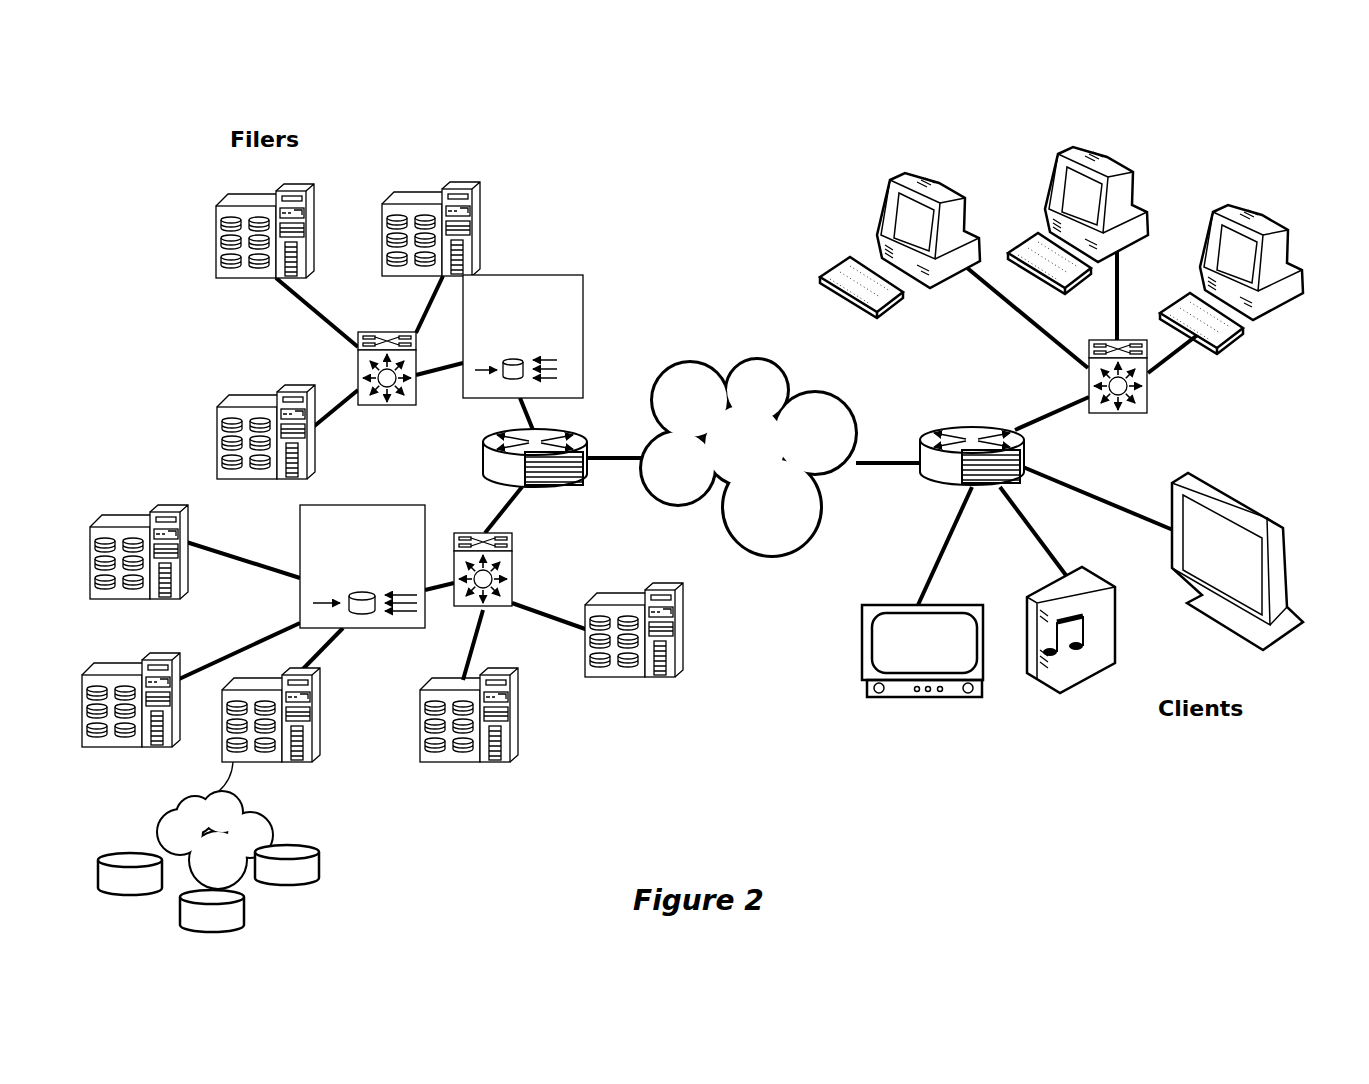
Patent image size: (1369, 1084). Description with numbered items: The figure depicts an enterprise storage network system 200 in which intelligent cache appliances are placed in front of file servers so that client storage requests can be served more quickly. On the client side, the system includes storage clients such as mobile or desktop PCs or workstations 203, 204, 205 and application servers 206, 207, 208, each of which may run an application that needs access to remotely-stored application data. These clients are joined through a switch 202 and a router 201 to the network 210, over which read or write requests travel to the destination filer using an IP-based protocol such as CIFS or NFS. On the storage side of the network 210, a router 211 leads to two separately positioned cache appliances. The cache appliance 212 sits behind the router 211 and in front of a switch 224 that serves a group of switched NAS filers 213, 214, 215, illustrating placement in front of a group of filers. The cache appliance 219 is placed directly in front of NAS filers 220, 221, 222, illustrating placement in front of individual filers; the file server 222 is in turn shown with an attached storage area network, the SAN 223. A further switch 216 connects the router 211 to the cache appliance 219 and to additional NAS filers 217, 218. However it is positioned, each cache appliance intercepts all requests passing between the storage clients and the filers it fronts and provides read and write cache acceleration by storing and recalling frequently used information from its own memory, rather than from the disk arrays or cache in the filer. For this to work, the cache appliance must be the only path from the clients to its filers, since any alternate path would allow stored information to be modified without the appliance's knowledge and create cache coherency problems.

The enterprise storage network system 200 is at (1272, 138).
The router 201 is at (972, 428).
The switch 202 is at (1152, 382).
The storage client 203 is at (932, 190).
The storage client 204 is at (1105, 158).
The storage client 205 is at (1257, 212).
The application server 206 is at (1212, 490).
The application server 207 is at (1117, 620).
The application server 208 is at (957, 605).
The network 210 is at (732, 468).
The router 211 is at (545, 428).
The cache appliance 212 is at (532, 276).
The NAS filer 213 is at (245, 398).
The NAS filer 214 is at (250, 196).
The NAS filer 215 is at (415, 196).
The switch 216 is at (512, 535).
The NAS filer 217 is at (682, 630).
The NAS filer 218 is at (520, 718).
The cache appliance 219 is at (380, 504).
The NAS filer 220 is at (170, 512).
The NAS filer 221 is at (160, 660).
The file server 222 is at (322, 718).
The SAN 223 is at (197, 868).
The switch 224 is at (387, 405).